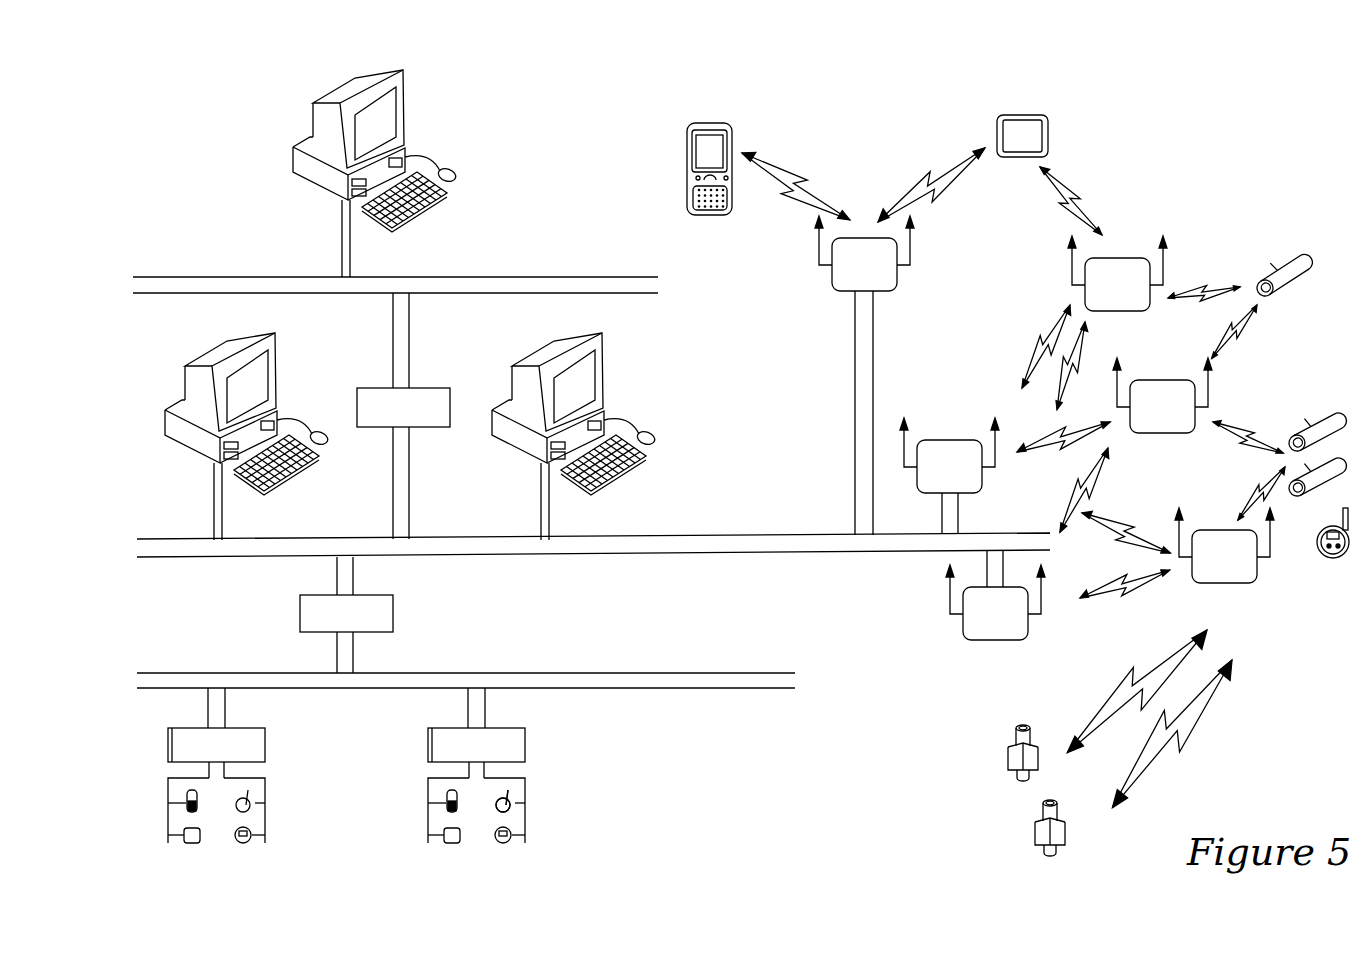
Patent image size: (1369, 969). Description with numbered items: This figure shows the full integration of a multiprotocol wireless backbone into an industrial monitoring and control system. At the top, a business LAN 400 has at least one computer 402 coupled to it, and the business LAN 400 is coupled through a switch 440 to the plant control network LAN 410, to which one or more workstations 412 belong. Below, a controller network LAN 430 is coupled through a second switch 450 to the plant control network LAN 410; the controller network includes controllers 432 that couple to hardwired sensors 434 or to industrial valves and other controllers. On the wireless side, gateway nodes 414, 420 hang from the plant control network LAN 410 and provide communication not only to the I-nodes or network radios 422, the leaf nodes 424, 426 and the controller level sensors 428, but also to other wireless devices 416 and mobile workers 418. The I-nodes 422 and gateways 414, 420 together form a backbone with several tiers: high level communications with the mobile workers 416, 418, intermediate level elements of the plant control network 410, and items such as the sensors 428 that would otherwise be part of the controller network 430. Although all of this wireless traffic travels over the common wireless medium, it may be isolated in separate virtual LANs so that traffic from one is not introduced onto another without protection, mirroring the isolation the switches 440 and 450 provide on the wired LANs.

The business LAN 400 is at (562, 277).
The computer 402 is at (407, 110).
The plant control network LAN 410 is at (627, 557).
The workstation 412 is at (278, 368).
The gateway node 414 is at (897, 282).
The wireless device 416 is at (712, 122).
The mobile worker 418 is at (1022, 115).
The gateway node 420 is at (948, 440).
The I-node/network radio 422 is at (1132, 258).
The leaf node 424 is at (1290, 258).
The leaf node 426 is at (1330, 560).
The controller level sensor 428 is at (1035, 830).
The controller network LAN 430 is at (740, 673).
The controller 432 is at (265, 735).
The hardwired sensor 434 is at (508, 800).
The switch 440 is at (432, 388).
The switch 450 is at (393, 620).